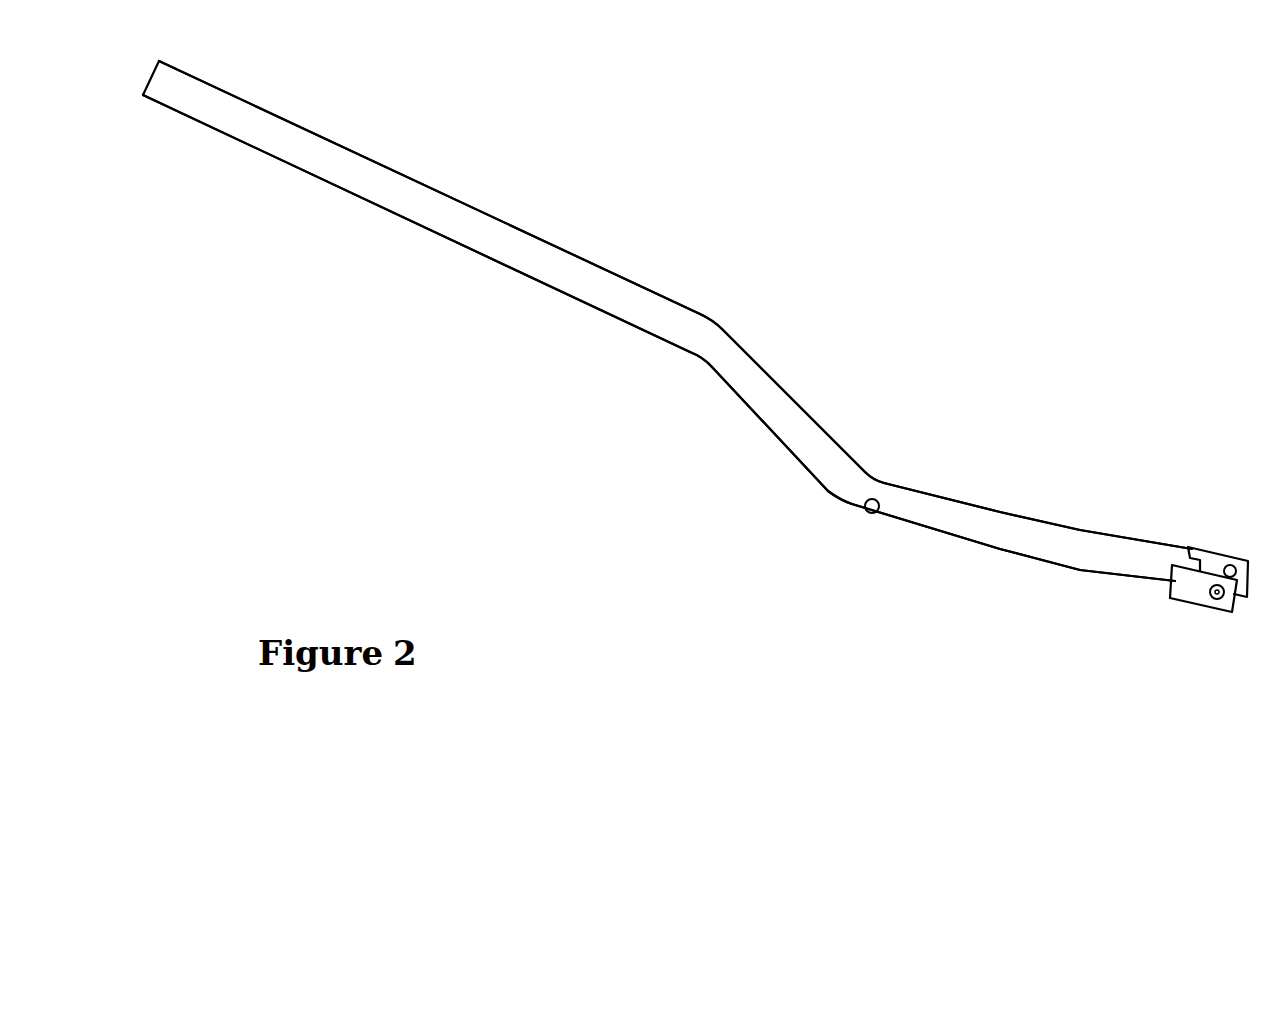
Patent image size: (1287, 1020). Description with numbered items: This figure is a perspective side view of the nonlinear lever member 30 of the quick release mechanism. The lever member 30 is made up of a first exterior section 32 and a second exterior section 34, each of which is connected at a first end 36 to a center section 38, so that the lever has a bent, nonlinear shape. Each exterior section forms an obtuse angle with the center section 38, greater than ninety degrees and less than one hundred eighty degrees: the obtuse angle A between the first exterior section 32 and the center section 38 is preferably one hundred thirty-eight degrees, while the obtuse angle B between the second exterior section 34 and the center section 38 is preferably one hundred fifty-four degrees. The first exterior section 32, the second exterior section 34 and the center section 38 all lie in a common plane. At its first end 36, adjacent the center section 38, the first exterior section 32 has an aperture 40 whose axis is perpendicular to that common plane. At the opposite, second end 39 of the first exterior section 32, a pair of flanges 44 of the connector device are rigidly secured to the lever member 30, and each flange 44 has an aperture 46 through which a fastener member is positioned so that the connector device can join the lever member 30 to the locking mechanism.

The nonlinear lever member 30 is at (820, 220).
The first exterior section 32 is at (1038, 527).
The second exterior section 34 is at (303, 140).
The first end 36 is at (707, 333).
The center section 38 is at (773, 398).
The second end 39 is at (1163, 558).
The aperture 40 is at (864, 506).
The flange 44 is at (1183, 588).
The aperture 46 is at (1213, 593).
The obtuse angle A is at (1013, 507).
The obtuse angle B is at (787, 463).